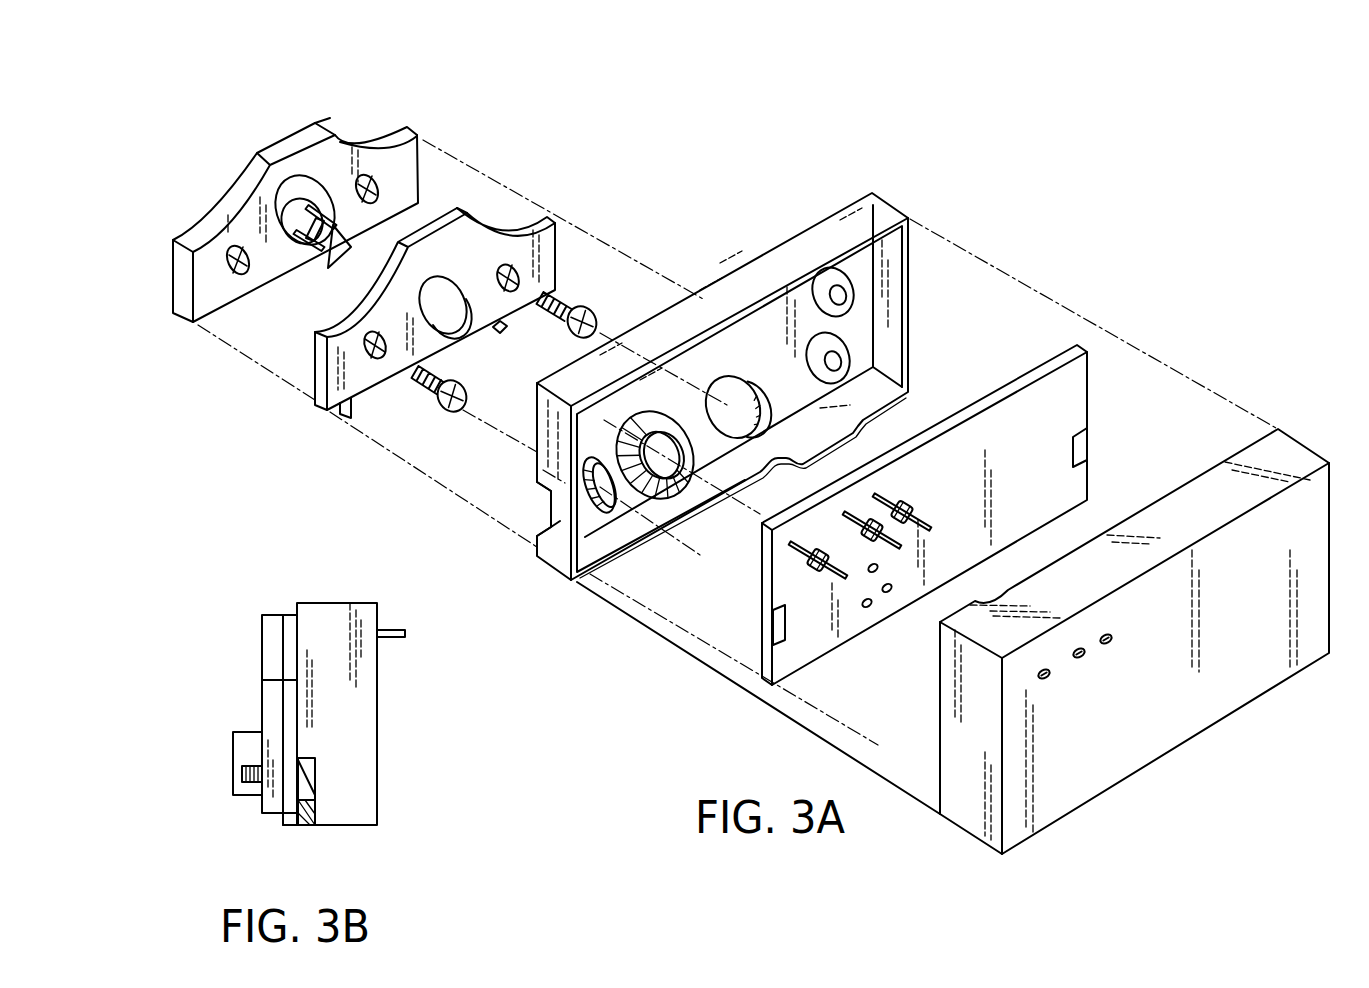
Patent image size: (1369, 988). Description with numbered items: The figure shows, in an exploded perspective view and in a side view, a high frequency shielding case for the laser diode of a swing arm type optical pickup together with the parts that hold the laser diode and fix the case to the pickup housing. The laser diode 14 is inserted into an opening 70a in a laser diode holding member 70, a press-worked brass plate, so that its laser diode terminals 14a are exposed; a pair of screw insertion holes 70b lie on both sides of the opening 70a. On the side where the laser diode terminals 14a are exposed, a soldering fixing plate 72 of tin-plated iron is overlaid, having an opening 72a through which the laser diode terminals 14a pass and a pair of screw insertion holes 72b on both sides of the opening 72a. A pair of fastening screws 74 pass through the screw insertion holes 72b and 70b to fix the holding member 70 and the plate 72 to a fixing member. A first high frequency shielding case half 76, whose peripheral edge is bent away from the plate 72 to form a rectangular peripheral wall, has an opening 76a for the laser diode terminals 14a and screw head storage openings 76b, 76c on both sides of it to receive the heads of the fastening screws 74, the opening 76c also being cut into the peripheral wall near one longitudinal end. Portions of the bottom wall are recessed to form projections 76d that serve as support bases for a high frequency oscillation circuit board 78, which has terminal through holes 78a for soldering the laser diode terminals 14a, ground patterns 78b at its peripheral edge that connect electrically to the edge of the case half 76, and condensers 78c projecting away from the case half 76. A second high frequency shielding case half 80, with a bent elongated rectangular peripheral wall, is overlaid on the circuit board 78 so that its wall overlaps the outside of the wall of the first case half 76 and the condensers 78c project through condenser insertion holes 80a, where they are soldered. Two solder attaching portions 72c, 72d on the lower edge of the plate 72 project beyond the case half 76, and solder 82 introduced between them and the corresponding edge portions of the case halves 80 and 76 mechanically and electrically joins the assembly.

In FIG. 3A, the laser diode 14 is at (256, 169).
In FIG. 3B, the laser diode 14 is at (250, 737).
In FIG. 3A, the laser diode terminals 14a is at (320, 256).
In FIG. 3A, the laser diode holding member 70 is at (317, 202).
In FIG. 3B, the laser diode holding member 70 is at (270, 703).
In FIG. 3A, the opening 70a is at (302, 180).
In FIG. 3A, the screw insertion holes 70b is at (232, 246).
In FIG. 3A, the soldering fixing plate 72 is at (466, 333).
In FIG. 3B, the soldering fixing plate 72 is at (288, 692).
In FIG. 3A, the opening 72a is at (457, 310).
In FIG. 3A, the screw insertion holes 72b is at (500, 271).
In FIG. 3A, the solder attaching portion 72c is at (375, 395).
In FIG. 3B, the solder attaching portion 72c is at (283, 818).
In FIG. 3A, the solder attaching portion 72d is at (506, 318).
In FIG. 3A, the fastening screws 74 is at (592, 318).
In FIG. 3B, the fastening screws 74 is at (242, 787).
In FIG. 3A, the first high frequency shielding case half 76 is at (751, 390).
In FIG. 3B, the first high frequency shielding case half 76 is at (303, 803).
In FIG. 3A, the opening 76a is at (672, 476).
In FIG. 3A, the screw head storage opening 76b is at (755, 416).
In FIG. 3A, the screw head storage opening 76c is at (592, 555).
In FIG. 3B, the screw head storage opening 76c is at (300, 768).
In FIG. 3A, the projections 76d is at (845, 357).
In FIG. 3A, the high frequency oscillation circuit board 78 is at (924, 525).
In FIG. 3A, the terminal through holes 78a is at (868, 608).
In FIG. 3A, the ground patterns 78b is at (1078, 457).
In FIG. 3A, the condensers 78c is at (912, 500).
In FIG. 3B, the condensers 78c is at (392, 632).
In FIG. 3A, the second high frequency shielding case half 80 is at (1134, 641).
In FIG. 3B, the second high frequency shielding case half 80 is at (363, 805).
In FIG. 3A, the condenser insertion holes 80a is at (1107, 645).
In FIG. 3B, the solder 82 is at (307, 823).